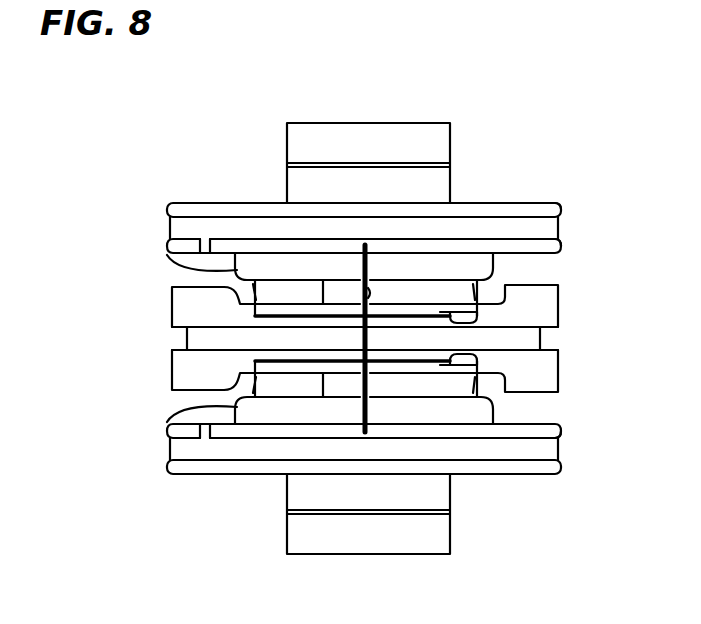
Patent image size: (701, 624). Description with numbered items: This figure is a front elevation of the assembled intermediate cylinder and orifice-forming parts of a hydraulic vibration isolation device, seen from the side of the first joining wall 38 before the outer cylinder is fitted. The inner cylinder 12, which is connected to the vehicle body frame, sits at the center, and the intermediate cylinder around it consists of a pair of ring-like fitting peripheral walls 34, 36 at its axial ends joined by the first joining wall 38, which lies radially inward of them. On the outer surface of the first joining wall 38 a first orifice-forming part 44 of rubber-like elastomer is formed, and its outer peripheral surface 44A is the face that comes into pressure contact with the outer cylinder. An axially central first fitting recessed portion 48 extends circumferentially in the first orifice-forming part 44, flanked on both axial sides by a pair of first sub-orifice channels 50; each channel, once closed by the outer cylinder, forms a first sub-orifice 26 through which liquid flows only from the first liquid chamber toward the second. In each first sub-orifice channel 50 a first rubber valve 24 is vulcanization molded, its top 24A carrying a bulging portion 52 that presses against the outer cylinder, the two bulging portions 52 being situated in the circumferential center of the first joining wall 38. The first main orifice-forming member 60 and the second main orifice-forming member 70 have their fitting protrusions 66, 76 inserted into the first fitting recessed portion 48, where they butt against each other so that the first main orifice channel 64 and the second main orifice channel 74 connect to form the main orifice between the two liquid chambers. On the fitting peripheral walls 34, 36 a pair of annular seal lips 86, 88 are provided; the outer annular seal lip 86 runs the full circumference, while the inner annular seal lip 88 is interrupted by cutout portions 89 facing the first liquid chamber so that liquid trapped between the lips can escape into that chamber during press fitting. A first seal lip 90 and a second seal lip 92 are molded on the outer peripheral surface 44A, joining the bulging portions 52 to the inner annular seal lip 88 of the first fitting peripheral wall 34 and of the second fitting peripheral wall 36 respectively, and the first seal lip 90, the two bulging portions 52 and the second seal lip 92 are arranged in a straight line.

The inner cylinder 12 is at (440, 146).
The first rubber valve 24 is at (342, 263).
The top of first rubber valve 24A is at (373, 297).
The first sub-orifice 26 is at (202, 338).
The first fitting peripheral wall 34 is at (183, 230).
The second fitting peripheral wall 36 is at (548, 460).
The first joining wall 38 is at (435, 290).
The first orifice-forming part 44 is at (473, 262).
The outer peripheral surface of first orifice-forming part 44A is at (347, 288).
The first fitting recessed portion 48 is at (482, 320).
The first sub-orifice channel 50 is at (272, 292).
The bulging portion 52 is at (364, 246).
The first main orifice-forming member 60 is at (180, 374).
The first main orifice channel 64 is at (188, 338).
The fitting protrusion 66 is at (332, 357).
The second main orifice-forming member 70 is at (545, 377).
The second main orifice channel 74 is at (530, 337).
The fitting protrusion 76 is at (424, 355).
The outer annular seal lip 86 is at (562, 210).
The inner annular seal lip 88 is at (518, 268).
The cutout portion 89 is at (203, 247).
The first seal lip 90 is at (371, 292).
The second seal lip 92 is at (372, 378).